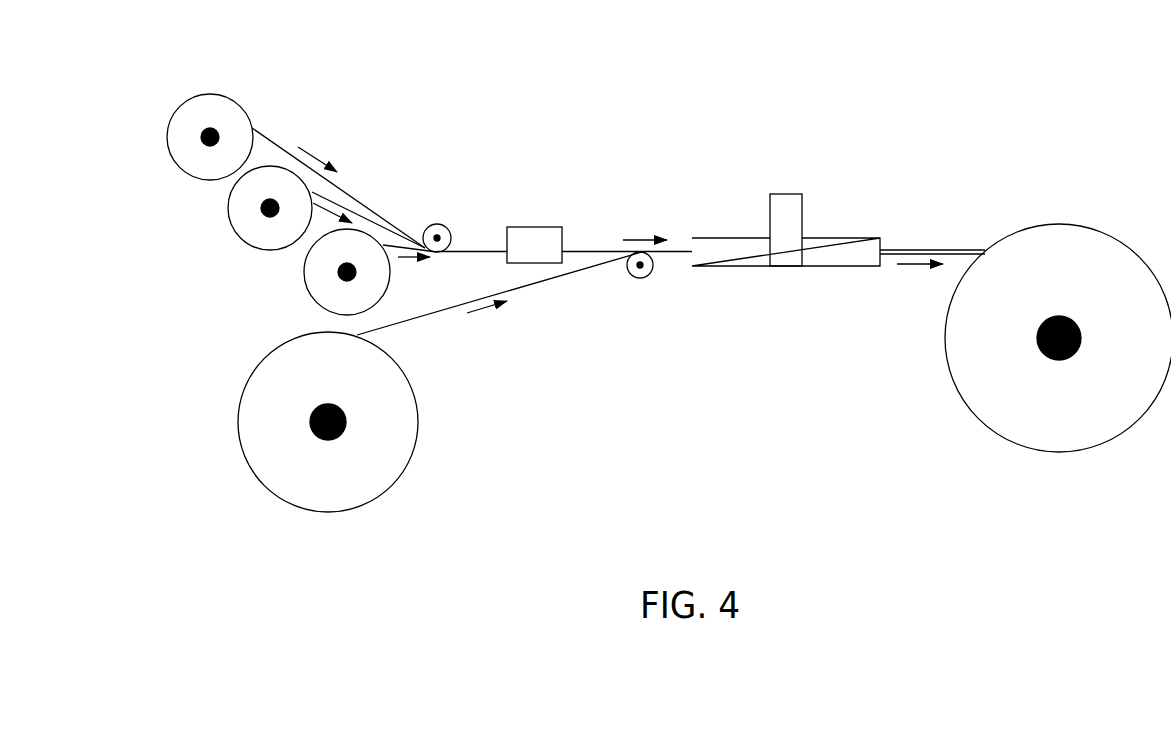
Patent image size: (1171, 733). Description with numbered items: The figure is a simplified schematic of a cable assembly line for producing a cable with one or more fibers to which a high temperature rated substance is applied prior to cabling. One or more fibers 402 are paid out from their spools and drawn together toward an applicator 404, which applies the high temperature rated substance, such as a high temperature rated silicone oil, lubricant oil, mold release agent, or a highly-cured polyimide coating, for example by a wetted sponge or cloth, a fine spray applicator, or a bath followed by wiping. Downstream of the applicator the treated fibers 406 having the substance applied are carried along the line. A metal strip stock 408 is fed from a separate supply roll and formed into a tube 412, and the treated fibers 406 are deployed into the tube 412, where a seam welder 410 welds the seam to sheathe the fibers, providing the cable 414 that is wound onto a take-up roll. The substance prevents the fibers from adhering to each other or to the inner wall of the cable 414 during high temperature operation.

The fibers 402 is at (278, 142).
The applicator 404 is at (538, 227).
The fibers having the substance applied 406 is at (600, 251).
The metal strip stock 408 is at (550, 280).
The seam welder 410 is at (786, 194).
The tube 412 is at (730, 266).
The cable 414 is at (937, 248).